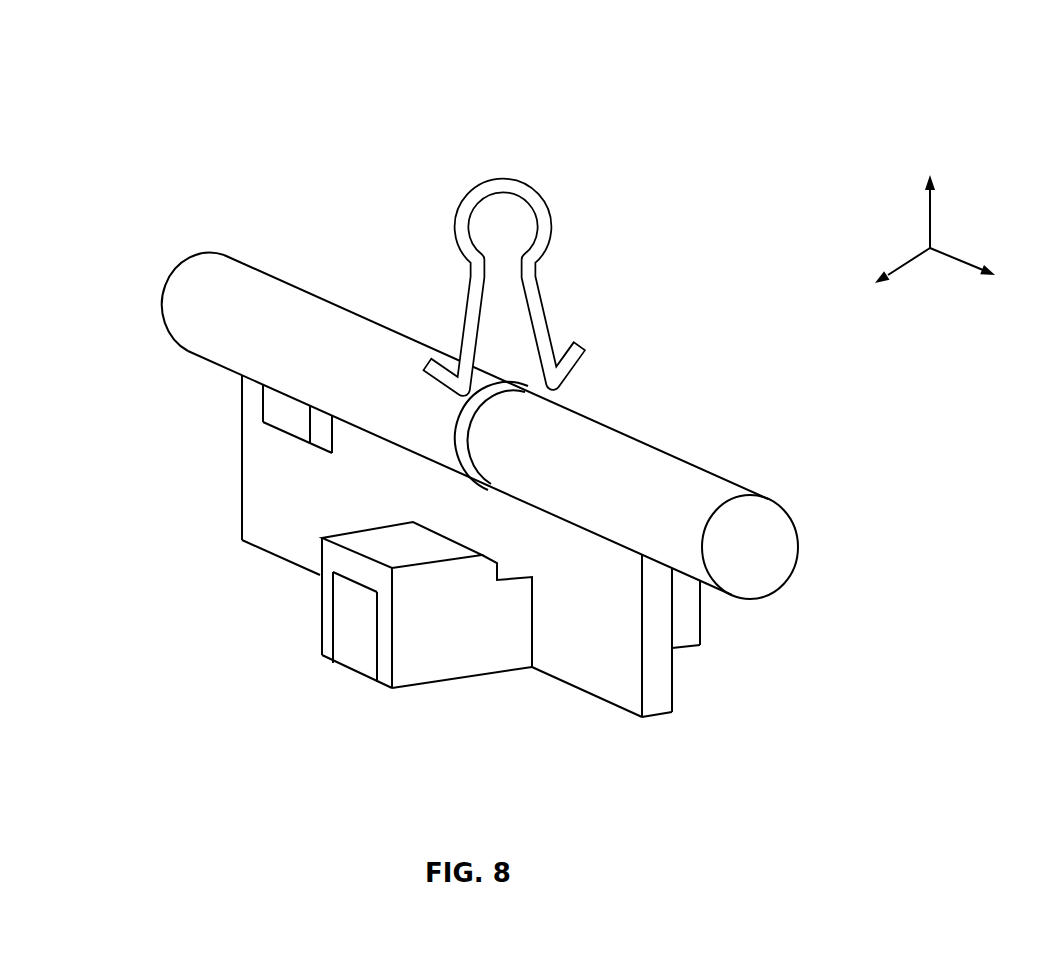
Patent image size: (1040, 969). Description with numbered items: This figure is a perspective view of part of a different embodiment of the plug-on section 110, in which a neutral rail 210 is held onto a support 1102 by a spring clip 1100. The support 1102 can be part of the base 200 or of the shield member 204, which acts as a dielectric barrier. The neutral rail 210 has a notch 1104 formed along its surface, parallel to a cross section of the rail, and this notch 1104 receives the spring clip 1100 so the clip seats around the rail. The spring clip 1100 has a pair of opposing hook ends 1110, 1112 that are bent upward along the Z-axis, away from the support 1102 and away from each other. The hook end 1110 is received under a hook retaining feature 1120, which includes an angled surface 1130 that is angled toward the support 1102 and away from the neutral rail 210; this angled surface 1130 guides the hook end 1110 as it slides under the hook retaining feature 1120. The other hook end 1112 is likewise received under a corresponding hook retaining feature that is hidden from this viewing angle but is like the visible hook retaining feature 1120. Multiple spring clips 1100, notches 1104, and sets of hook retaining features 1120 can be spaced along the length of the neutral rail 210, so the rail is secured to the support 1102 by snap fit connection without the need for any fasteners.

The plug-on section 110 is at (562, 407).
The neutral rail 210 is at (773, 558).
The base 200 is at (247, 495).
The shield member 204 is at (293, 538).
The spring clip 1100 is at (563, 275).
The support 1102 is at (600, 608).
The notch 1104 is at (494, 383).
The hook end 1110 is at (447, 387).
The hook end 1112 is at (582, 362).
The hook retaining feature 1120 is at (420, 649).
The angled surface 1130 is at (495, 552).